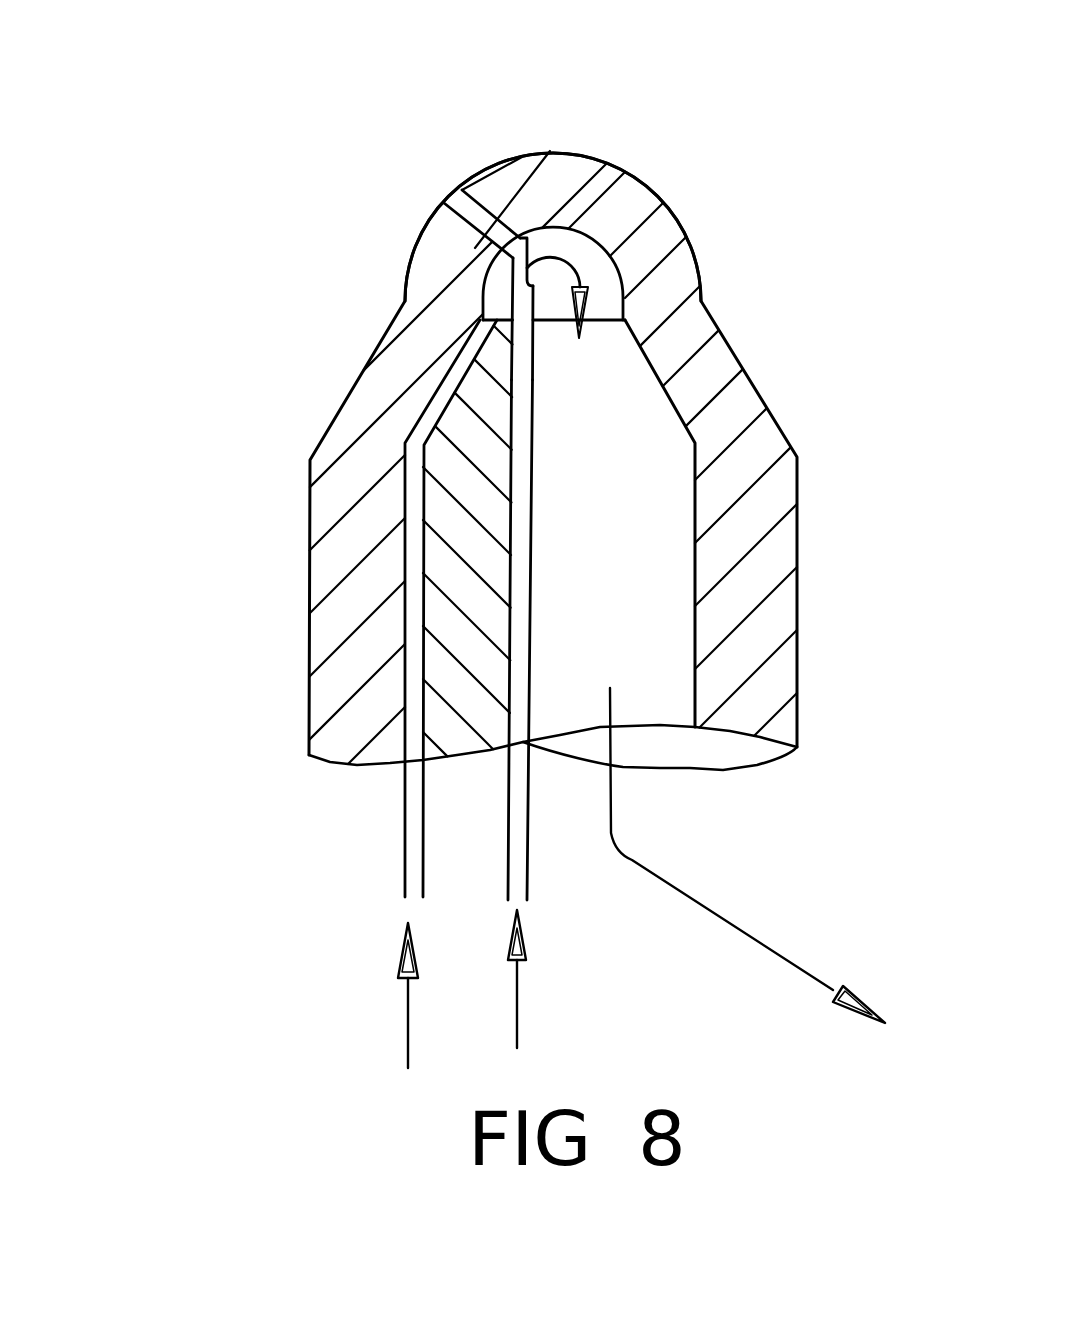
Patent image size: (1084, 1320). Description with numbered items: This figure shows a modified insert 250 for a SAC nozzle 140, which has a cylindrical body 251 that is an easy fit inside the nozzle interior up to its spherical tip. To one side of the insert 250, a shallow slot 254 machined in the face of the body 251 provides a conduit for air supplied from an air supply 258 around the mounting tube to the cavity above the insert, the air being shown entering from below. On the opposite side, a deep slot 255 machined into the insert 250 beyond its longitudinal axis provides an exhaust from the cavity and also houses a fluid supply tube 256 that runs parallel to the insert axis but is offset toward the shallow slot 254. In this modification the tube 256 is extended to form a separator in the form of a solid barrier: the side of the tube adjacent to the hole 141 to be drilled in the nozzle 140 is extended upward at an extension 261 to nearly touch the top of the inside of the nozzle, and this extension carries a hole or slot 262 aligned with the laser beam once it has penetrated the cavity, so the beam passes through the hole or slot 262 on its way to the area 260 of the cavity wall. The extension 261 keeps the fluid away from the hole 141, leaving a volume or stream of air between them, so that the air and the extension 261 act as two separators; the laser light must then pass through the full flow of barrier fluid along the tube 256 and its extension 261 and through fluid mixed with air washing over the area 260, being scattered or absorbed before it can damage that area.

The SAC nozzle 140 is at (733, 548).
The hole 141 is at (445, 187).
The insert 250 is at (457, 688).
The cylindrical body 251 is at (503, 362).
The shallow slot 254 is at (452, 383).
The deep slot 255 is at (582, 418).
The fluid supply tube 256 is at (536, 373).
The air supply 258 is at (417, 583).
The area of the cavity wall 260 is at (600, 242).
The extension 261 is at (515, 238).
The hole or slot 262 is at (512, 260).